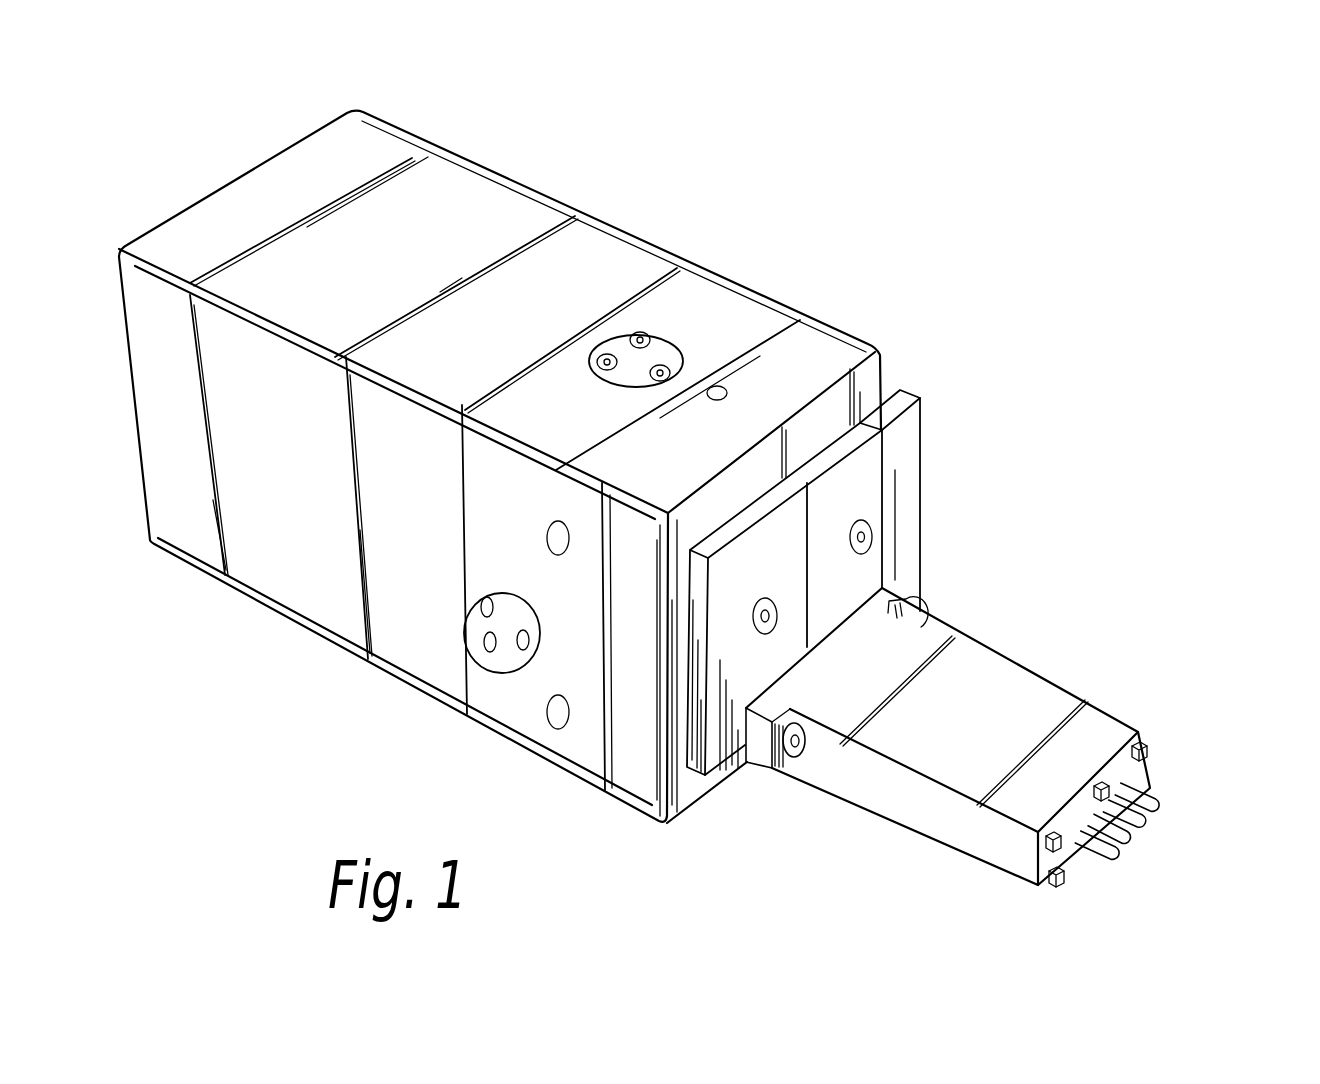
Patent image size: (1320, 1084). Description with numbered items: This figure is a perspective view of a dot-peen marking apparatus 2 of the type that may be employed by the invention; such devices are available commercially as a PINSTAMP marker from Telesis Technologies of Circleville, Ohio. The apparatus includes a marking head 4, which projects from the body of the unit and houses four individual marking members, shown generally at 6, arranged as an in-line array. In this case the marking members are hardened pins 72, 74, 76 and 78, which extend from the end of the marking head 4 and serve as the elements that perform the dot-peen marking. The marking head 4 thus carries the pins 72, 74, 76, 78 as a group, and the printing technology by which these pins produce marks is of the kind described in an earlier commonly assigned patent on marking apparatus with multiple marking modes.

The dot-peen marking apparatus 2 is at (685, 160).
The marking head 4 is at (1075, 677).
The marking members 6 is at (1180, 727).
The hardened pin 72 is at (1160, 805).
The hardened pin 74 is at (1146, 822).
The hardened pin 76 is at (1130, 840).
The hardened pin 78 is at (1117, 859).